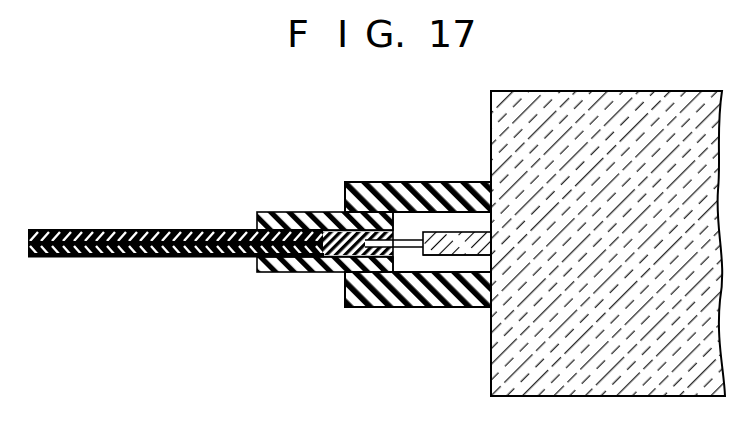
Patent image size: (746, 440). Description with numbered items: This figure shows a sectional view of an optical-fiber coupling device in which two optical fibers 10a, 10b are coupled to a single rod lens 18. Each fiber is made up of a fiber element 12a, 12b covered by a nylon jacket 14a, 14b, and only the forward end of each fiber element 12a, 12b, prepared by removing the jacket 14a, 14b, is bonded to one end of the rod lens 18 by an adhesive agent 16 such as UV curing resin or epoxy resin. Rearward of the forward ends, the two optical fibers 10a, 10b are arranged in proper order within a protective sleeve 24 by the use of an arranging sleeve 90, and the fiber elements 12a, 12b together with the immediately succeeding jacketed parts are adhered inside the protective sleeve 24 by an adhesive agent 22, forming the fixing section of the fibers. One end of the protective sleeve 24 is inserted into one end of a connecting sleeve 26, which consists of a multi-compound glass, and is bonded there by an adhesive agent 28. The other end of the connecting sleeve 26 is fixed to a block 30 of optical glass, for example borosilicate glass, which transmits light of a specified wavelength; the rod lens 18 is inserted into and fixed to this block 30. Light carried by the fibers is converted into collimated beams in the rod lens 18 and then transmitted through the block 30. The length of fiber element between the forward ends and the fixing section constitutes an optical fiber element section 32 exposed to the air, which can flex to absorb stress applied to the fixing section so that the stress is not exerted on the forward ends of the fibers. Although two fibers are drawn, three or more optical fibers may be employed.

The optical fiber 10a is at (72, 229).
The optical fiber 10b is at (82, 257).
The nylon jacket 14a is at (145, 230).
The nylon jacket 14b is at (134, 257).
The fiber element 12a is at (216, 230).
The fiber element 12b is at (195, 257).
The adhesive agent 22 is at (333, 225).
The protective sleeve 24 is at (277, 272).
The adhesive agent 28 is at (362, 276).
The optical fiber element section 32 is at (385, 200).
The adhesive agent 16 is at (408, 238).
The rod lens 18 is at (452, 256).
The arranging sleeve 90 is at (408, 244).
The connecting sleeve 26 is at (424, 298).
The block 30 is at (558, 396).